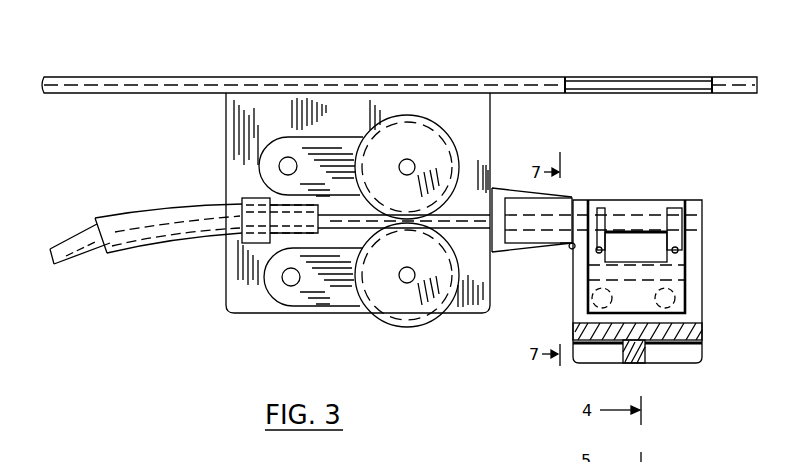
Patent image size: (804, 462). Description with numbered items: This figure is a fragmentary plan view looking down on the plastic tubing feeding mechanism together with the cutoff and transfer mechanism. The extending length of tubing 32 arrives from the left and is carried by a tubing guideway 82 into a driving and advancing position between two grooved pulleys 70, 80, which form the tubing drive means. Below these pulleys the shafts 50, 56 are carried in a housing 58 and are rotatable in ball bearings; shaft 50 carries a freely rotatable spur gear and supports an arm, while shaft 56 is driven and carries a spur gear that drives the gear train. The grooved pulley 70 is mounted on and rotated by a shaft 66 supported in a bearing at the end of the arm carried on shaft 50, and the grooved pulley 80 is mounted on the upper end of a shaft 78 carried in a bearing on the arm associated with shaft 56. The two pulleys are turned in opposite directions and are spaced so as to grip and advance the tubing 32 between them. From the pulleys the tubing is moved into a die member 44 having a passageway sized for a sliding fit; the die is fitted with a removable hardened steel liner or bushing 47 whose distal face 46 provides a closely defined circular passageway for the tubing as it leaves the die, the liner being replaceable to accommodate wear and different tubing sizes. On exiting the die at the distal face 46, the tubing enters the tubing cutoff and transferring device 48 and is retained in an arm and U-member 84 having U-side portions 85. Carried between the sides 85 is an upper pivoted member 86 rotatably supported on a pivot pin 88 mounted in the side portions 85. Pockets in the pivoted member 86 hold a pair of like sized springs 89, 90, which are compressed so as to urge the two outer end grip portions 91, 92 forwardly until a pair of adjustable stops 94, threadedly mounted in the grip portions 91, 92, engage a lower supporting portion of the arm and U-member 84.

The tubing 32 is at (69, 246).
The tubing guideway 82 is at (196, 206).
The shaft 50 is at (285, 159).
The shaft 56 is at (287, 283).
The housing 58 is at (305, 314).
The shaft 66 is at (404, 161).
The grooved pulley 70 is at (405, 118).
The shaft 78 is at (408, 284).
The grooved pulley 80 is at (388, 305).
The liner or bushing 47 is at (514, 190).
The distal face 46 is at (571, 249).
The pivot pin 88 is at (704, 256).
The U-side portions 85 is at (577, 262).
The outer end grip portion 91 is at (600, 208).
The outer end grip portion 92 is at (674, 208).
The adjustable stops 94 is at (673, 248).
The spring 90 is at (597, 300).
The spring 89 is at (706, 326).
The upper pivoted member 86 is at (646, 306).
The die member 44 is at (538, 286).
The arm and U-member 84 is at (706, 313).
The tubing cutoff and transferring device 48 is at (583, 366).